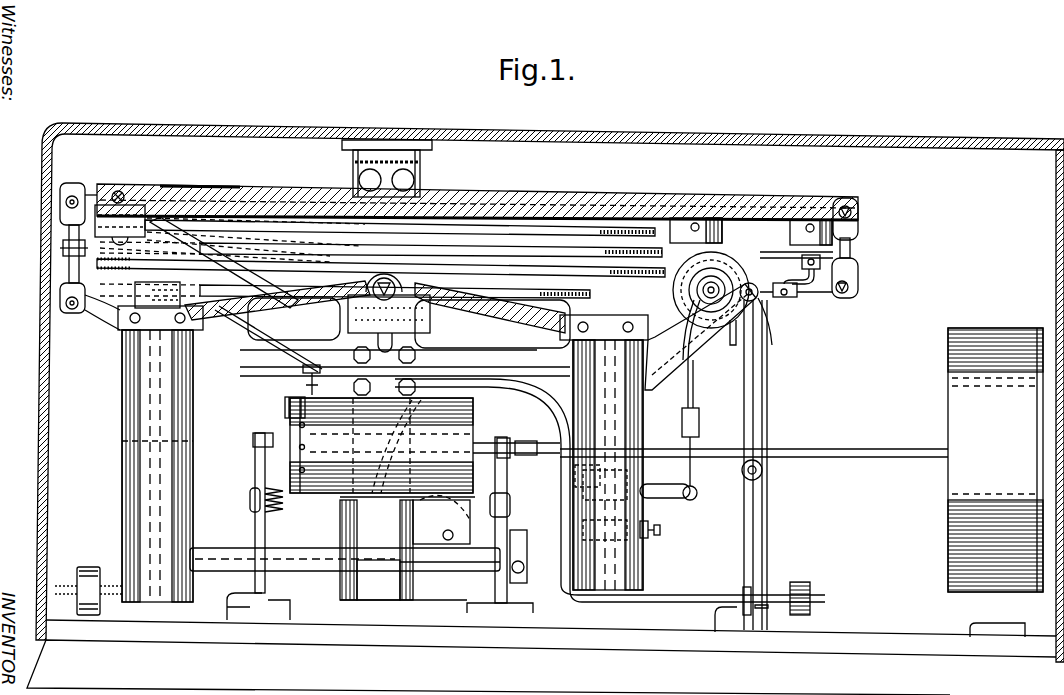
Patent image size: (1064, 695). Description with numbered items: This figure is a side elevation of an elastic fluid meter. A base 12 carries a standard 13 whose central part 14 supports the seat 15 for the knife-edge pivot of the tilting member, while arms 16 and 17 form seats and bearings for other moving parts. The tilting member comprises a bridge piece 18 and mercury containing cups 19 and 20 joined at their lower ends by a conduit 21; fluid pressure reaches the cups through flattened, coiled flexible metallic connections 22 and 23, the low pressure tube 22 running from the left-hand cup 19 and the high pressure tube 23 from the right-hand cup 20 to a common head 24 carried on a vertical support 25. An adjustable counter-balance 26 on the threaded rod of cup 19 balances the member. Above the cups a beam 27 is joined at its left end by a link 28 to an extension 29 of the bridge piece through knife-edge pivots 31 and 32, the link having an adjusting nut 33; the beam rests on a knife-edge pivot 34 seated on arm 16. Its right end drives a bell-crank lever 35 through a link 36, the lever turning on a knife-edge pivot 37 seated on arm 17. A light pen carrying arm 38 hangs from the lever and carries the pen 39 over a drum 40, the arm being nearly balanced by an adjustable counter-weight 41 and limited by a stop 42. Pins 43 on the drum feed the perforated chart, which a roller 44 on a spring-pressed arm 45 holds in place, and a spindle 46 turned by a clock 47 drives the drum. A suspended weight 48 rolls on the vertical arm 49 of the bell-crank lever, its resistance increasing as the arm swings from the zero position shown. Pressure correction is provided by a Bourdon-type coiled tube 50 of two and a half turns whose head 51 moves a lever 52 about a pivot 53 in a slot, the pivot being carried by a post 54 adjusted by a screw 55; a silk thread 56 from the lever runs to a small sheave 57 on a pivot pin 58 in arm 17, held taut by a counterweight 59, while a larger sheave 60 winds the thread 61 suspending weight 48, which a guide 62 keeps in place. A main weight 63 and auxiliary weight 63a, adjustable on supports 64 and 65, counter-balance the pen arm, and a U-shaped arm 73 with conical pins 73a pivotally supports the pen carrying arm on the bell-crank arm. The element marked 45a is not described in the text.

The base 12 is at (541, 667).
The standard 13 is at (371, 558).
The central part 14 is at (425, 308).
The seat 15 is at (277, 310).
The arm 16 is at (266, 333).
The arm 17 is at (700, 337).
The bridge piece 18 is at (492, 315).
The mercury containing cup 19 is at (122, 396).
The mercury containing cup 20 is at (644, 422).
The conduit 21 is at (222, 549).
The flexible metallic connection 22 is at (183, 193).
The flexible metallic connection 23 is at (633, 240).
The head 24 is at (425, 190).
The vertical support 25 is at (370, 279).
The adjustable counter-balance 26 is at (90, 567).
The lever or beam 27 is at (518, 196).
The link 28 is at (67, 234).
The extension 29 is at (95, 330).
The knife-edge pivot 31 is at (76, 188).
The knife-edge pivot 32 is at (60, 306).
The adjusting nut 33 is at (62, 253).
The knife-edge pivot 34 is at (119, 192).
The bell-crank lever 35 is at (798, 298).
The link 36 is at (858, 245).
The knife-edge pivot 37 is at (767, 315).
The pen carrying arm 38 is at (642, 600).
The pen 39 is at (303, 381).
The drum 40 is at (381, 445).
The adjustable counter-weight 41 is at (800, 583).
The stop 42 is at (732, 616).
The pins 43 is at (295, 497).
The roller 44 is at (283, 404).
The spring-pressed arm 45 is at (257, 470).
The housing 45a is at (1056, 219).
The spindle 46 is at (847, 455).
The clock 47 is at (995, 482).
The suspended weight 48 is at (763, 478).
The arm 49 is at (742, 541).
The coiled tube 50 is at (541, 388).
The head 51 is at (566, 475).
The lever 52 is at (668, 497).
The pivot 53 is at (640, 475).
The post 54 is at (562, 506).
The screw 55 is at (660, 531).
The silk thread 56 is at (694, 394).
The small sheave 57 is at (682, 306).
The pivot pin 58 is at (702, 290).
The counterweight 59 is at (700, 421).
The larger sheave 60 is at (728, 256).
The thread 61 is at (764, 407).
The guide 62 is at (768, 384).
The main weight 63 is at (690, 218).
The auxiliary weight 63a is at (806, 220).
The support 64 is at (786, 276).
The support 65 is at (803, 277).
The U-shaped arm 73 is at (745, 590).
The pins 73a is at (753, 610).